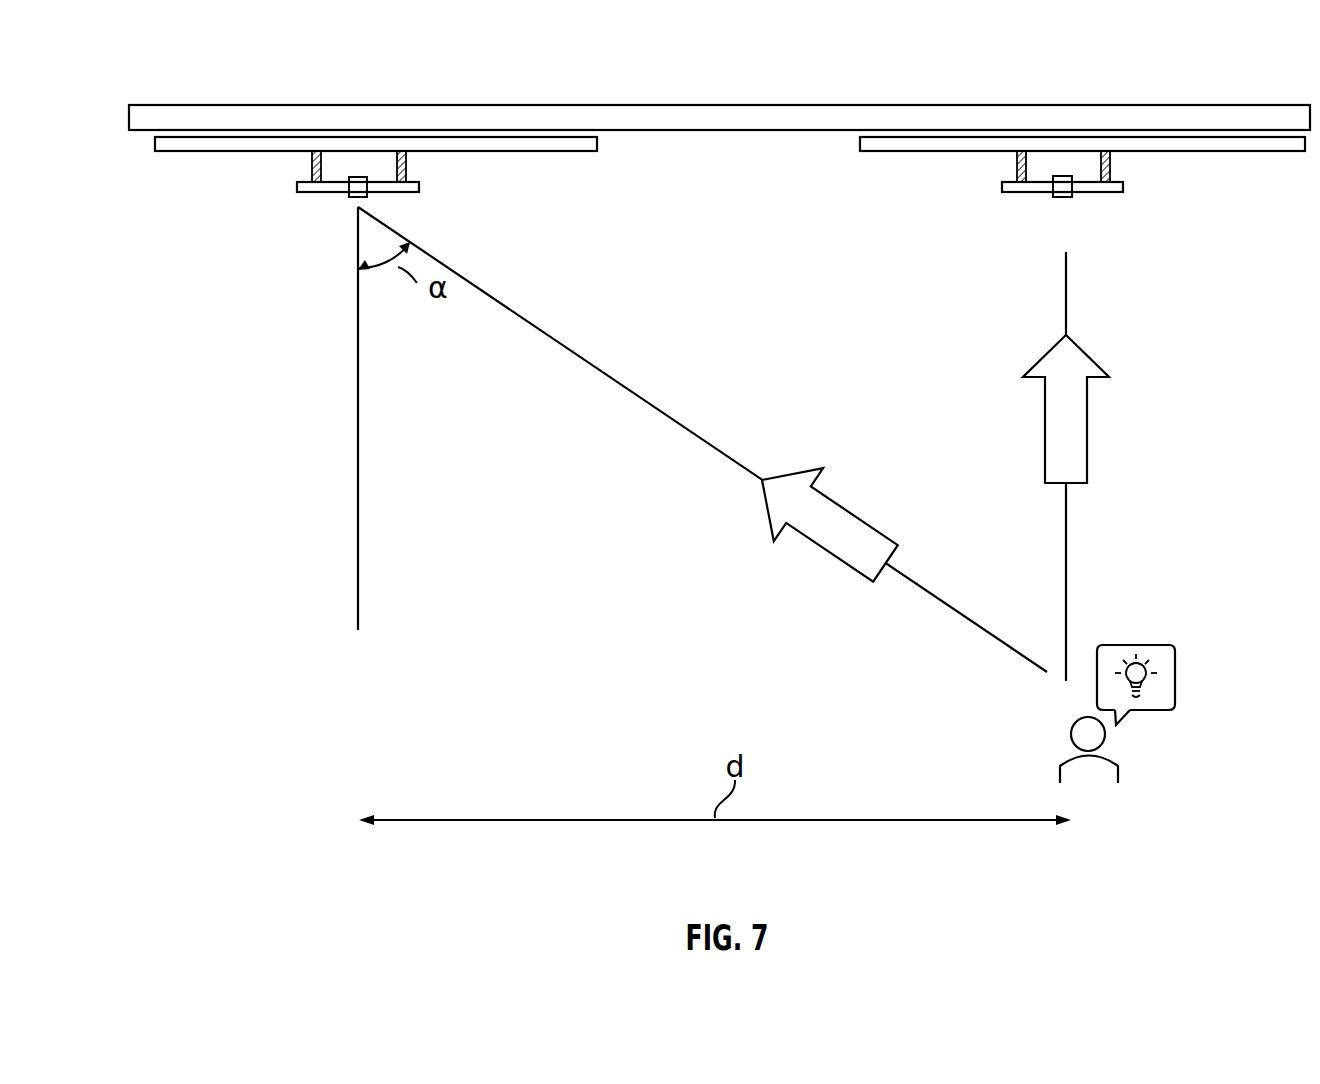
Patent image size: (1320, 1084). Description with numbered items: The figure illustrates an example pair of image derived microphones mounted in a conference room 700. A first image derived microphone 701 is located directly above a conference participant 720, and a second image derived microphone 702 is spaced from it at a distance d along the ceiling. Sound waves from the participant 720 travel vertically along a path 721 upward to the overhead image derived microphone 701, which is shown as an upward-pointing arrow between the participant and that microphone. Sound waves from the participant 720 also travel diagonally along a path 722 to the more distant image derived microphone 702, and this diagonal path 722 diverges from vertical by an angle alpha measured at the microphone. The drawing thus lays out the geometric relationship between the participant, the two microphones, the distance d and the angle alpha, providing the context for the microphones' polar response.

The conference room 700 is at (160, 76).
The image derived microphone 701 is at (1035, 193).
The image derived microphone 702 is at (332, 193).
The conference participant 720 is at (1058, 775).
The path 721 is at (1045, 428).
The path 722 is at (832, 553).